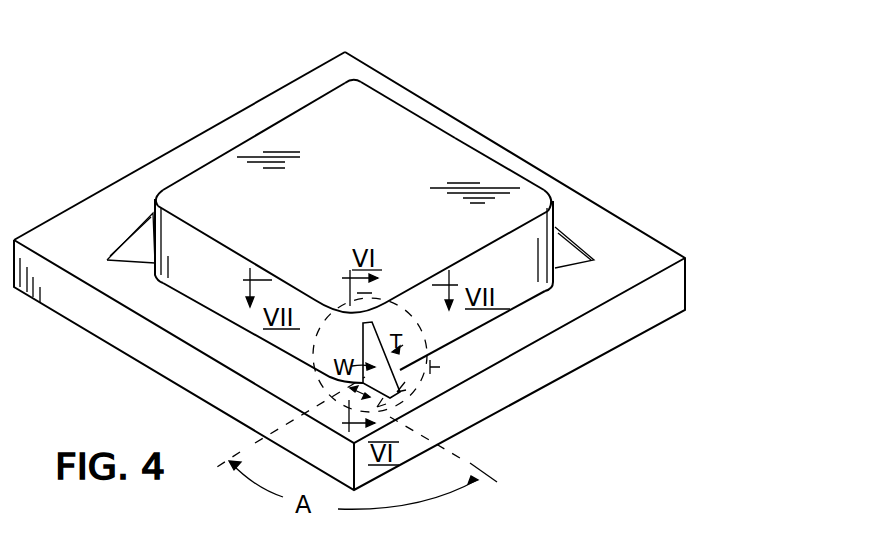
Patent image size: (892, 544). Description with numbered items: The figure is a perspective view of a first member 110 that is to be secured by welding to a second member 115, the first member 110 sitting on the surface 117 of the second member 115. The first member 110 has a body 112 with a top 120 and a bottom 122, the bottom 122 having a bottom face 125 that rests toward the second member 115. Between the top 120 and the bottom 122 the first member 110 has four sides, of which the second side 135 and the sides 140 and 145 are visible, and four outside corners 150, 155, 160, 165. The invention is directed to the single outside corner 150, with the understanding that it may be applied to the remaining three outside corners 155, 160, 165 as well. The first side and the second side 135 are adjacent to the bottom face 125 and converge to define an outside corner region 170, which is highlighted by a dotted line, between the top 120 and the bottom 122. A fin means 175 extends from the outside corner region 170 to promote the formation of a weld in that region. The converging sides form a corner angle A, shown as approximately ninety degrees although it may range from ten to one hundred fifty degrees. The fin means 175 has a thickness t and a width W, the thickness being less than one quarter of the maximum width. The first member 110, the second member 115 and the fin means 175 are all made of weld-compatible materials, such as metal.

The first member 110 is at (362, 137).
The body 112 is at (413, 118).
The second member 115 is at (90, 253).
The surface 117 is at (152, 173).
The top 120 is at (380, 199).
The bottom 122 is at (441, 346).
The bottom face 125 is at (533, 298).
The second side 135 is at (210, 256).
The side 140 is at (305, 100).
The side 145 is at (506, 160).
The outside corner 150 is at (345, 340).
The outside corner 155 is at (153, 192).
The outside corner 160 is at (350, 78).
The outside corner 165 is at (553, 203).
The outside corner region 170 is at (432, 368).
The fin means 175 is at (410, 375).